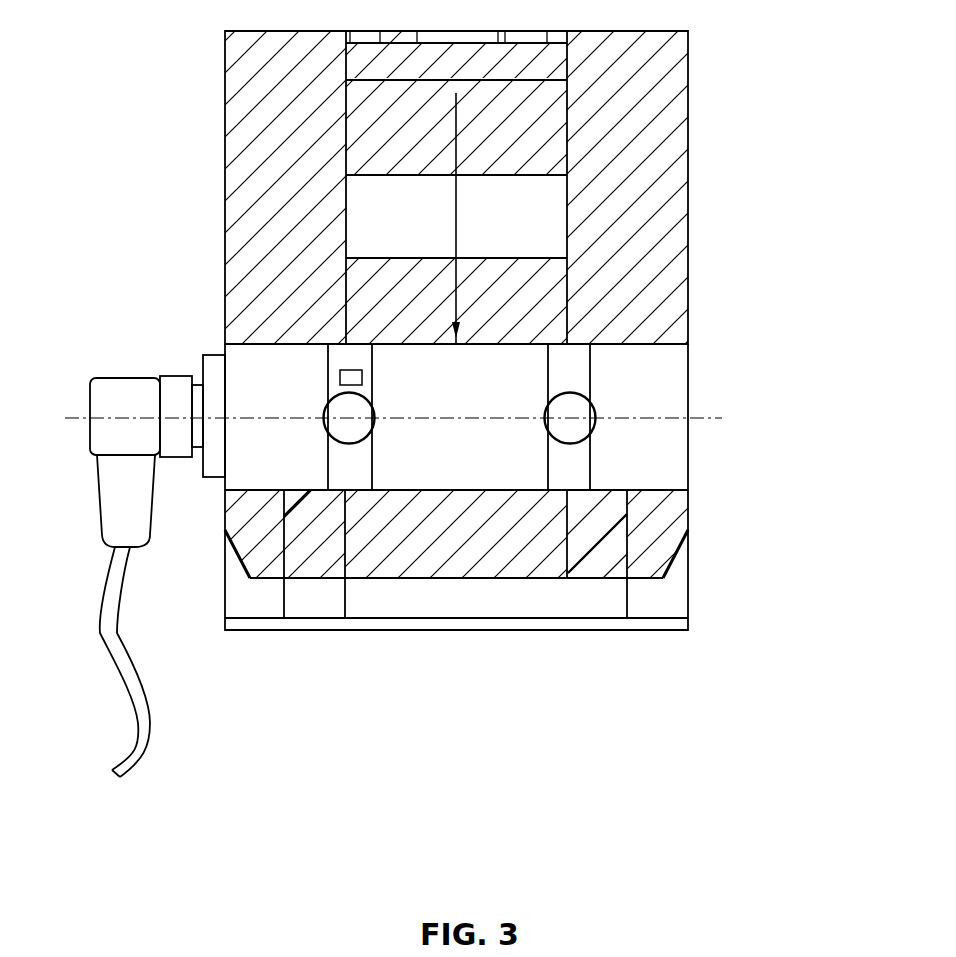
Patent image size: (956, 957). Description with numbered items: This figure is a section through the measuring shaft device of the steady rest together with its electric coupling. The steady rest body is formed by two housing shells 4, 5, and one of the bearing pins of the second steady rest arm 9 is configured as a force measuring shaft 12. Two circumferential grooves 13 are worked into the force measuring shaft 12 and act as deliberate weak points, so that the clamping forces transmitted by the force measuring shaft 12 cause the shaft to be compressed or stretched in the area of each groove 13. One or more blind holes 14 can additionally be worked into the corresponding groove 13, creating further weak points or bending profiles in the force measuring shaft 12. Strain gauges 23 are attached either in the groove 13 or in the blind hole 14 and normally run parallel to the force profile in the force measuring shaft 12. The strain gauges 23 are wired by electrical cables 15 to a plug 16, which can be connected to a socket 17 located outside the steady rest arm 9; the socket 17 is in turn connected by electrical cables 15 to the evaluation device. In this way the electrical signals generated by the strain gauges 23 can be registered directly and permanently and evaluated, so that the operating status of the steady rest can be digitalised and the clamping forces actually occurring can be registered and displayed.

The housing shell 4 is at (657, 558).
The housing shell 5 is at (322, 558).
The second steady rest arm 9 is at (428, 536).
The force measuring shaft 12 is at (648, 380).
The circumferential groove 13 is at (337, 363).
The blind hole 14 is at (593, 387).
The electrical cable 15 is at (147, 670).
The plug 16 is at (137, 395).
The socket 17 is at (213, 393).
The strain gauge 23 is at (325, 383).